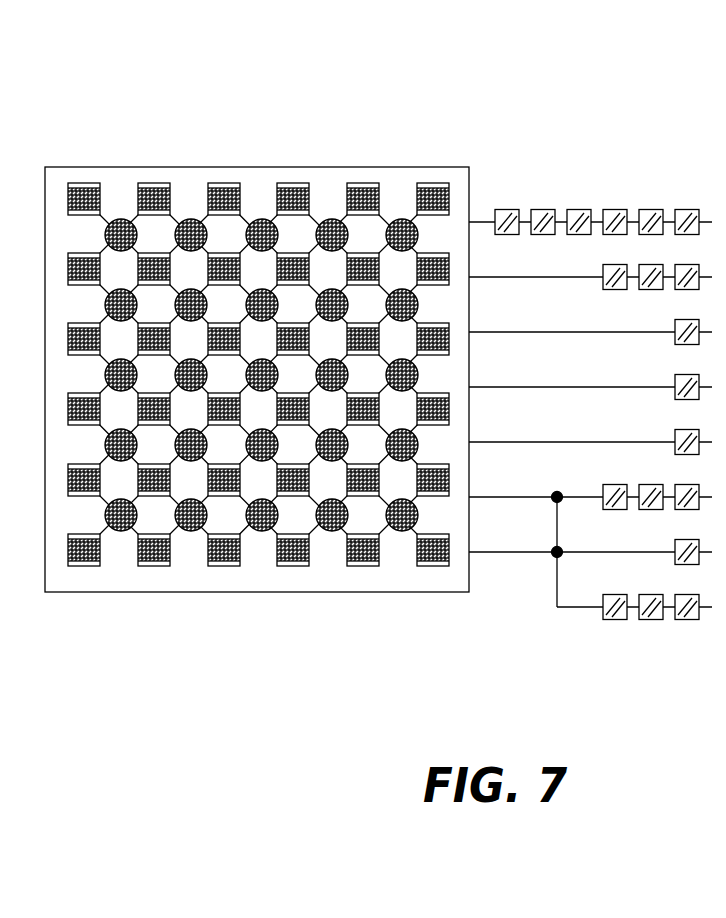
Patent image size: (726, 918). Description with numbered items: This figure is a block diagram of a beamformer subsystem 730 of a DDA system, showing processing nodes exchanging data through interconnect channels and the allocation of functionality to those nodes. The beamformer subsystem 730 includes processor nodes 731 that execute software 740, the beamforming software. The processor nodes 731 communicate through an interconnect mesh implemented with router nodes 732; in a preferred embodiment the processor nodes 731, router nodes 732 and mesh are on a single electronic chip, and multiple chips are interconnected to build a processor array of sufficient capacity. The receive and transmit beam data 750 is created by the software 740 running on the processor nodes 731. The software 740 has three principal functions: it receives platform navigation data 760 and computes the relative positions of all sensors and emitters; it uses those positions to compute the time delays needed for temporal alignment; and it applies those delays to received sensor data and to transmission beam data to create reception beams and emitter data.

The beamformer subsystem 730 is at (204, 167).
The processor nodes 731 is at (366, 183).
The router nodes 732 is at (418, 304).
The software 740 is at (441, 186).
The beam data 750 is at (291, 167).
The platform navigation data 760 is at (381, 593).